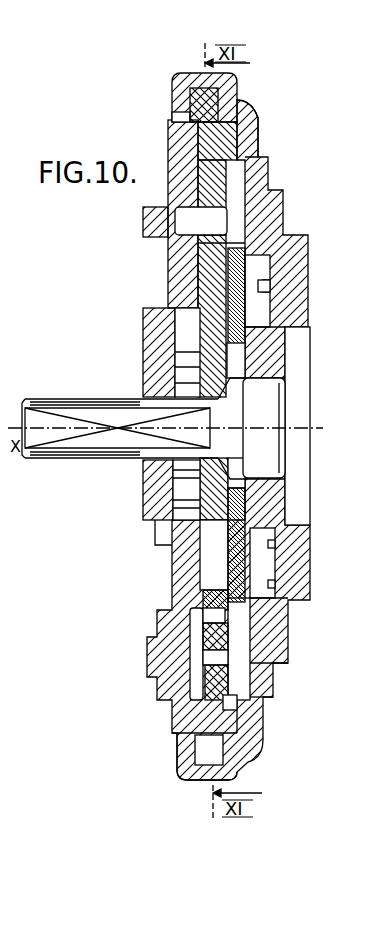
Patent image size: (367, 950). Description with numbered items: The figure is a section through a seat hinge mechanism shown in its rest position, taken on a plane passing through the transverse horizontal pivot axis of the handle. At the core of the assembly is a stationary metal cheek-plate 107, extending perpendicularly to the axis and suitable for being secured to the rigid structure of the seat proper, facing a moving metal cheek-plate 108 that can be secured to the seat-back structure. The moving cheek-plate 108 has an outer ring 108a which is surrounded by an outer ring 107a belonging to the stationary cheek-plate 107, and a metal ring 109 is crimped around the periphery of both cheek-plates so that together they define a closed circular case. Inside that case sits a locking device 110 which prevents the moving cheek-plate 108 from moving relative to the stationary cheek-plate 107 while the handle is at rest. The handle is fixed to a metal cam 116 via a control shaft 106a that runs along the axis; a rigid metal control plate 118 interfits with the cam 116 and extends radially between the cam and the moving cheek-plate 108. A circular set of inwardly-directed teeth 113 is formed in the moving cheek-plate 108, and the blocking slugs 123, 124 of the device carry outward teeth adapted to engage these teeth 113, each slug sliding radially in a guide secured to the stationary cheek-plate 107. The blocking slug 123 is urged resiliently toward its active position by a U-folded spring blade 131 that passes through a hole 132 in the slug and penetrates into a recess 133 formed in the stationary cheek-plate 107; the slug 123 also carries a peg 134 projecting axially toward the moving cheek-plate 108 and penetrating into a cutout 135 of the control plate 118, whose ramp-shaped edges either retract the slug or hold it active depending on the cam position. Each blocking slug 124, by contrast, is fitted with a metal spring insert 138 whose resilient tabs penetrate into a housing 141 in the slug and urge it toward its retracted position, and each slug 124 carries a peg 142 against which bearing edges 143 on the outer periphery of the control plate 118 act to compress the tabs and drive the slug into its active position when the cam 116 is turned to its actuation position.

The control shaft 106a is at (110, 437).
The stationary cheek-plate 107 is at (188, 268).
The outer ring 107a is at (207, 752).
The moving cheek-plate 108 is at (287, 272).
The outer ring 108a is at (270, 720).
The metal ring 109 is at (230, 81).
The locking device 110 is at (237, 203).
The inwardly-directed teeth 113 is at (253, 140).
The cam 116 is at (207, 520).
The control plate 118 is at (232, 562).
The blocking slug 123 is at (212, 178).
The blocking slug 124 is at (210, 596).
The spring 131 is at (227, 222).
The hole 132 is at (245, 250).
The recess 133 is at (157, 236).
The peg 134 is at (247, 286).
The cutout 135 is at (276, 312).
The spring insert 138 is at (273, 670).
The housing 141 is at (208, 647).
The peg 142 is at (267, 633).
The bearing edges 143 is at (252, 608).